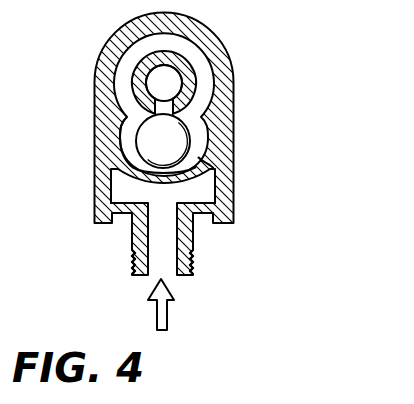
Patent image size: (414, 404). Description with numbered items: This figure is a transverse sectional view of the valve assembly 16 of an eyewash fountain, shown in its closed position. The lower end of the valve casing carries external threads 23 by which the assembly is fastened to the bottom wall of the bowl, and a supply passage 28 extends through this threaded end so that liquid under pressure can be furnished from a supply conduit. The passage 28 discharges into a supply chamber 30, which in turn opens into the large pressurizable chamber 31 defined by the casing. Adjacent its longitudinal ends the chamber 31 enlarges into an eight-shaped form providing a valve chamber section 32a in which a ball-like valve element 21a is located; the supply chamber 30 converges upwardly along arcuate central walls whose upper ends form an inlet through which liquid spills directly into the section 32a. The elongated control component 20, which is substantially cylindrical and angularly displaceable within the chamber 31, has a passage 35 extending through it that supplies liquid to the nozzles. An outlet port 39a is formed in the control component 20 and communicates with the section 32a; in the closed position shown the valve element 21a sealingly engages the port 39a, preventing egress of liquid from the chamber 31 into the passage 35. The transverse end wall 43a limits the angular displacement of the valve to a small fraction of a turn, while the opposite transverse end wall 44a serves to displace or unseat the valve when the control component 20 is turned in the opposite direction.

The valve assembly 16 is at (100, 36).
The control component 20 is at (177, 72).
The pressurizable chamber 31 is at (210, 76).
The passage 35 is at (177, 88).
The outlet port 39a is at (152, 110).
The transverse end wall 44a is at (123, 139).
The valve chamber section 32a is at (200, 134).
The valve element 21a is at (183, 151).
The transverse end wall 43a is at (208, 172).
The supply chamber 30 is at (118, 188).
The supply passage 28 is at (149, 242).
The threads 23 is at (135, 266).